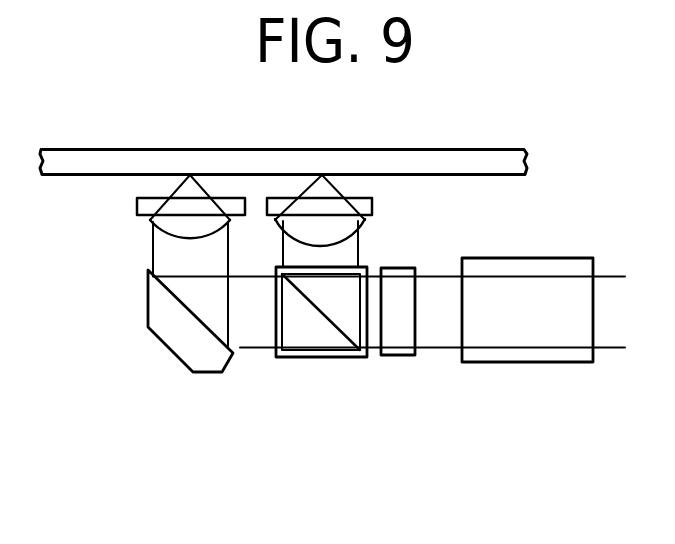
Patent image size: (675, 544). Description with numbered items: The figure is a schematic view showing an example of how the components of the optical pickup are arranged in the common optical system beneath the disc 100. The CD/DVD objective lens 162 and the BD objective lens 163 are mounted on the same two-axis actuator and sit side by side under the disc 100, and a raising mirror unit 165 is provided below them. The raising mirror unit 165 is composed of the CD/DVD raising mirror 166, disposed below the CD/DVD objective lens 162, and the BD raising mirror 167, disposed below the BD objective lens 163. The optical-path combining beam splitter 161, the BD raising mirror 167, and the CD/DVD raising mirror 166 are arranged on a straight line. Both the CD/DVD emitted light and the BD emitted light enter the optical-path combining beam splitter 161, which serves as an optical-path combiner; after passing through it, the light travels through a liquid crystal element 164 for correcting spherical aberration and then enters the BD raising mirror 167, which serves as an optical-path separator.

The optical disc (recording medium) 100 is at (73, 157).
The optical-path combining beam splitter 161 is at (463, 363).
The CD/DVD objective lens 162 is at (140, 208).
The BD objective lens 163 is at (375, 207).
The liquid crystal element 164 is at (403, 356).
The raising mirror unit 165 is at (257, 391).
The CD/DVD raising mirror 166 is at (222, 373).
The BD raising mirror 167 is at (300, 358).